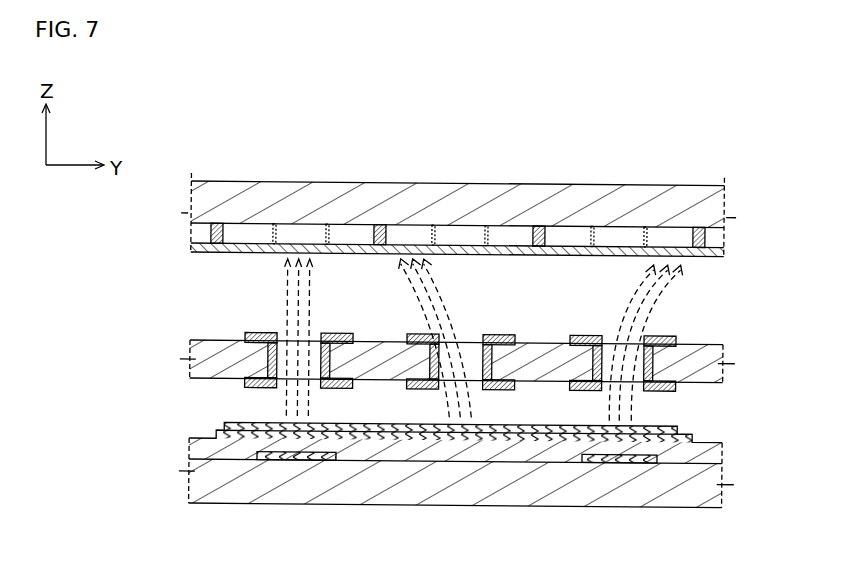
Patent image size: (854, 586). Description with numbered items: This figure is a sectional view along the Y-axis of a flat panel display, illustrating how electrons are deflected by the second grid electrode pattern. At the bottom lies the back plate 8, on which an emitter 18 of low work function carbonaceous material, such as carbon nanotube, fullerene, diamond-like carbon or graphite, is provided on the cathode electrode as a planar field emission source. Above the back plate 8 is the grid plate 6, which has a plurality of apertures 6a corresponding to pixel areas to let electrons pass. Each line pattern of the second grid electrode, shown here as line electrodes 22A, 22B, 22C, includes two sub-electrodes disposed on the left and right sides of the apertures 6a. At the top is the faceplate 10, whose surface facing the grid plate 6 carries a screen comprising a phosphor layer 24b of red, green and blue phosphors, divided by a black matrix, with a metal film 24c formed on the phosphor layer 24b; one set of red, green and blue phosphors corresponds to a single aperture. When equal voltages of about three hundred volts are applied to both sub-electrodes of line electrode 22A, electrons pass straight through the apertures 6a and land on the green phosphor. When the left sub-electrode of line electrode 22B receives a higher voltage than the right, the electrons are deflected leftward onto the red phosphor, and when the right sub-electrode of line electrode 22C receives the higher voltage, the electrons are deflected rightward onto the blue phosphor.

The faceplate 10 is at (678, 181).
The phosphor layer 24b is at (530, 222).
The metal film 24c is at (583, 247).
The grid plate 6 is at (723, 341).
The apertures 6a is at (283, 375).
The line electrode 22A is at (245, 331).
The line electrode 22B is at (489, 328).
The line electrode 22C is at (674, 329).
The emitter 18 is at (682, 430).
The back plate 8 is at (705, 503).